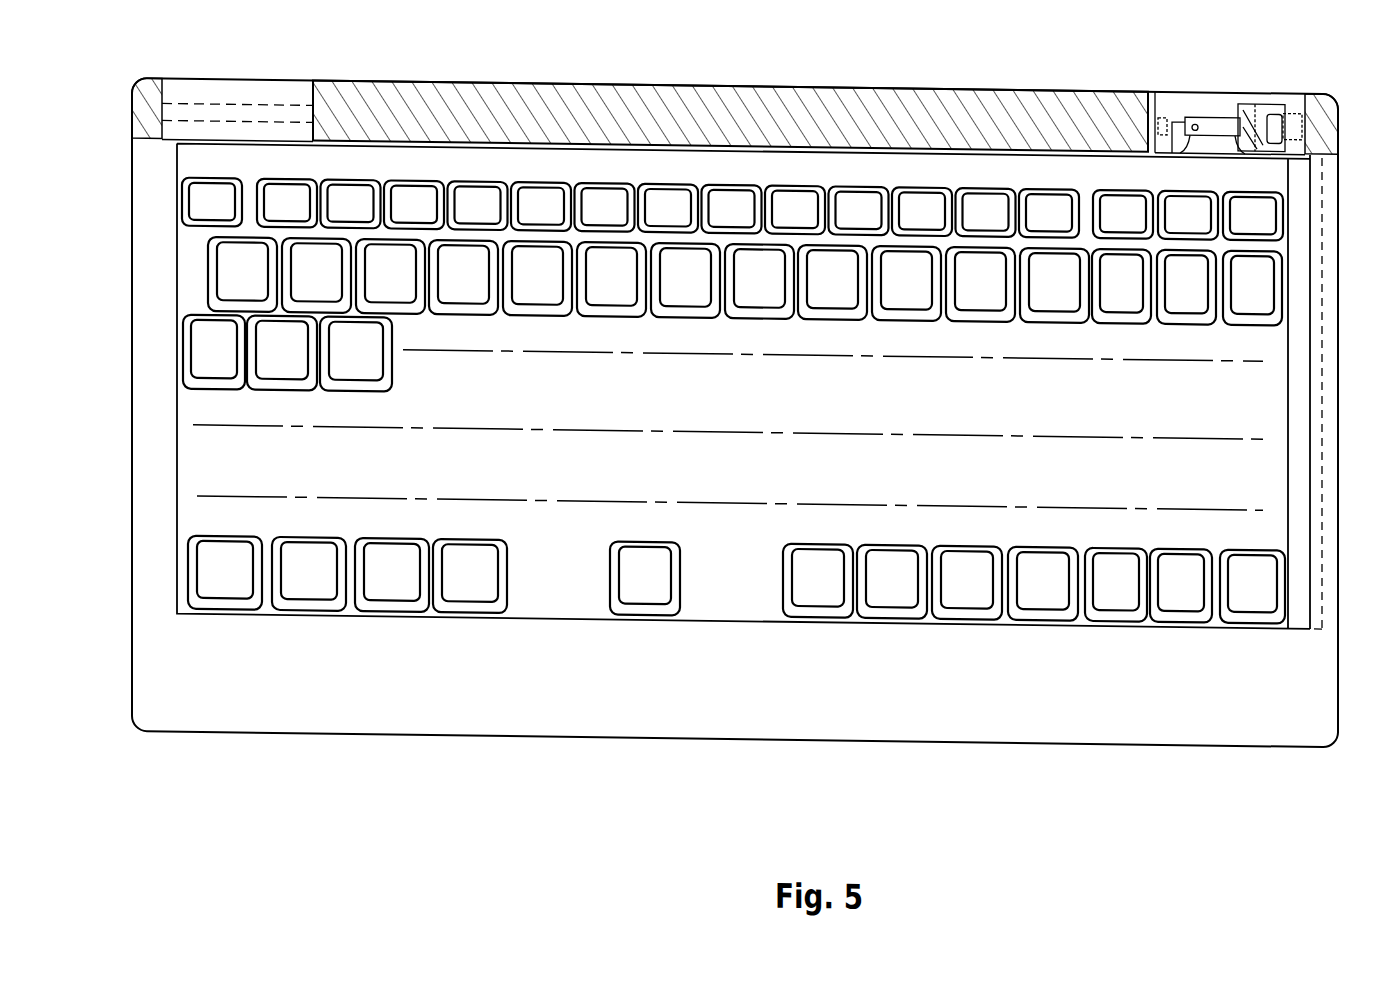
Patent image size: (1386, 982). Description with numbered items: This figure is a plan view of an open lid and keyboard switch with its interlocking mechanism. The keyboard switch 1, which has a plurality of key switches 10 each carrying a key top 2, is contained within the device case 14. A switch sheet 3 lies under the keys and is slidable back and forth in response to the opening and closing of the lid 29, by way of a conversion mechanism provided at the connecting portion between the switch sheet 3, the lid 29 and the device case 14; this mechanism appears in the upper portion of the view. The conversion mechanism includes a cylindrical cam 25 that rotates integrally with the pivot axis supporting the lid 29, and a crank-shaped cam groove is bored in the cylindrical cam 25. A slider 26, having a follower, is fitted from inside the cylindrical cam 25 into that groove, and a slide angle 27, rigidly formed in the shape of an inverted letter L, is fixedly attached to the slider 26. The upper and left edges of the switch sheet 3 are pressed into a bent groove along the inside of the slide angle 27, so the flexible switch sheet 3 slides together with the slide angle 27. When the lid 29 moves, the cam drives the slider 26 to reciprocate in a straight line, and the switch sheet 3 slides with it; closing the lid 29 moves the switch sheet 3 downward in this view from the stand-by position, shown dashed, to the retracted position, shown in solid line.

The keyboard switch 1 is at (759, 410).
The key top 2 is at (475, 195).
The switch sheet 3 is at (198, 249).
The key switch 10 is at (604, 181).
The device case 14 is at (1072, 690).
The cylindrical cam 25 is at (1273, 88).
The slider 26 is at (1222, 110).
The slide angle 27 is at (1293, 217).
The lid 29 is at (800, 111).